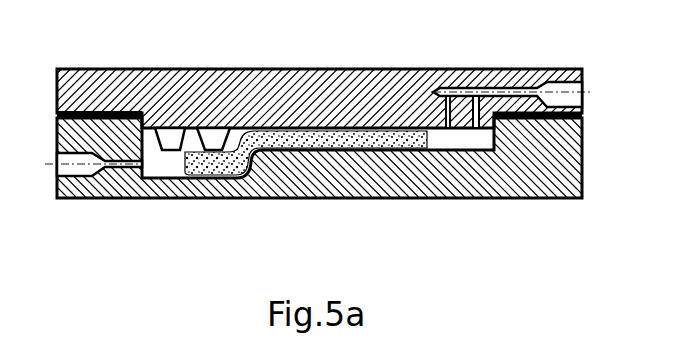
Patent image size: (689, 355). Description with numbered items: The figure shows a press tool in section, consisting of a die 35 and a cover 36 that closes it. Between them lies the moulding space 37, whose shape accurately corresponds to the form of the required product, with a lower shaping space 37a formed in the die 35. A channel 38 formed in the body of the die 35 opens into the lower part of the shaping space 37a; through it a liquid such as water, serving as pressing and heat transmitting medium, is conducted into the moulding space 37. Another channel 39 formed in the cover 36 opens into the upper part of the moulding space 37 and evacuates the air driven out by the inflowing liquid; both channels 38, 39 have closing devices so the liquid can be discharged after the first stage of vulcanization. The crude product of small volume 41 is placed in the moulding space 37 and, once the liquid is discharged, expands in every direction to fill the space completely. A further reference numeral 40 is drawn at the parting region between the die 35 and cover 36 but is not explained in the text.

The die 35 is at (543, 177).
The cover 36 is at (360, 88).
The moulding space 37 is at (462, 141).
The shaping space 37a is at (166, 168).
The channel 38 is at (118, 172).
The channel 39 is at (478, 88).
The parting plane 40 is at (90, 110).
The crude product of small volume 41 is at (280, 127).